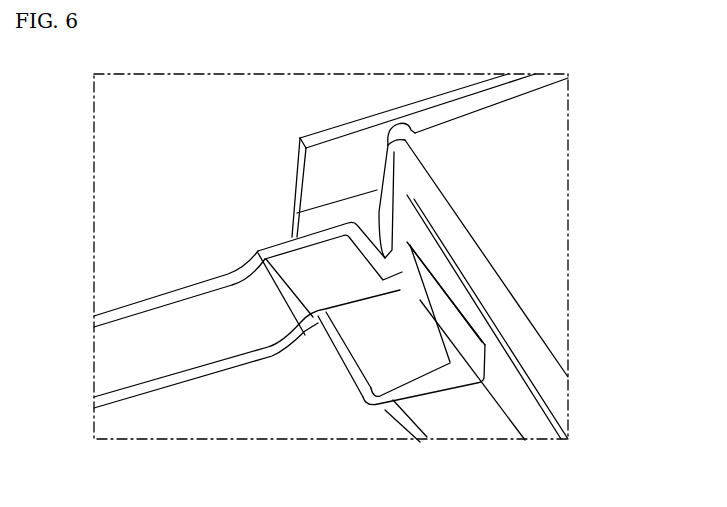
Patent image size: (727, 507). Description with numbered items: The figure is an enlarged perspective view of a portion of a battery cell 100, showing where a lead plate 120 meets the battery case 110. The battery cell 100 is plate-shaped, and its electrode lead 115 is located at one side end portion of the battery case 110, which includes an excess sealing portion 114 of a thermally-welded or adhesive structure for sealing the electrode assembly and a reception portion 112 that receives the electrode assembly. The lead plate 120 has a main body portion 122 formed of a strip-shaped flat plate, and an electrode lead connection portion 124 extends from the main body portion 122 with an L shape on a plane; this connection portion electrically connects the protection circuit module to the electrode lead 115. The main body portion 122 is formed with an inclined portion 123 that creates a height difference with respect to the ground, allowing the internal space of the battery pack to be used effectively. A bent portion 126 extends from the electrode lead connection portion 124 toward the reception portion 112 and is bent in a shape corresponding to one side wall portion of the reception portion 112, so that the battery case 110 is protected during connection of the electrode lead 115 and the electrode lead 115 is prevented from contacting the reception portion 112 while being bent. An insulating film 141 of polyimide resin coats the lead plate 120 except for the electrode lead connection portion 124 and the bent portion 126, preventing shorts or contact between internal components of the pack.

The battery cell 100 is at (153, 108).
The battery case 110 is at (384, 140).
The reception portion 112 is at (297, 190).
The excess sealing portion 114 is at (425, 417).
The electrode lead 115 is at (323, 347).
The lead plate 120 is at (228, 230).
The main body portion 122 is at (163, 318).
The inclined portion 123 is at (290, 257).
The electrode lead connection portion 124 is at (371, 406).
The bent portion 126 is at (430, 297).
The insulating film 141 is at (204, 276).